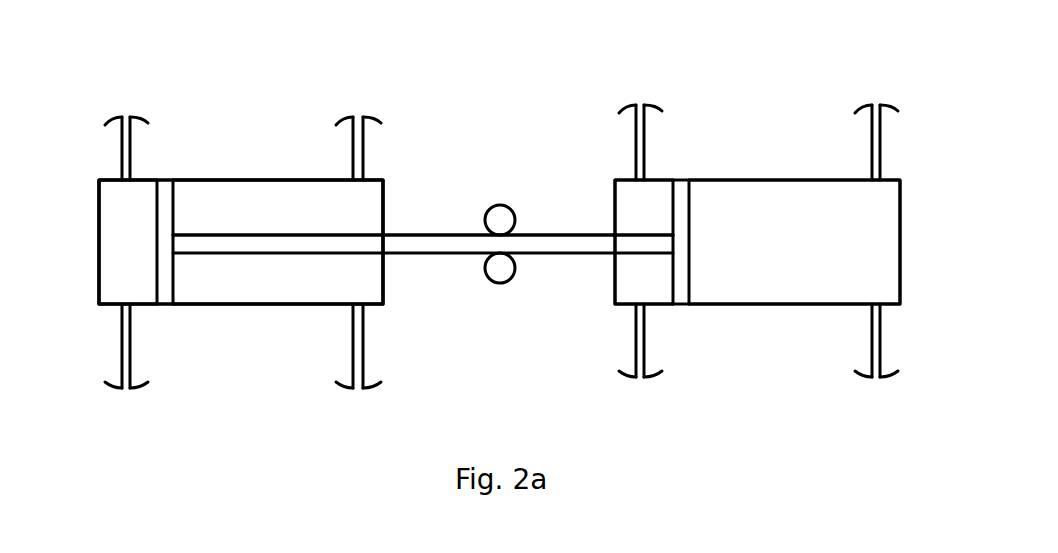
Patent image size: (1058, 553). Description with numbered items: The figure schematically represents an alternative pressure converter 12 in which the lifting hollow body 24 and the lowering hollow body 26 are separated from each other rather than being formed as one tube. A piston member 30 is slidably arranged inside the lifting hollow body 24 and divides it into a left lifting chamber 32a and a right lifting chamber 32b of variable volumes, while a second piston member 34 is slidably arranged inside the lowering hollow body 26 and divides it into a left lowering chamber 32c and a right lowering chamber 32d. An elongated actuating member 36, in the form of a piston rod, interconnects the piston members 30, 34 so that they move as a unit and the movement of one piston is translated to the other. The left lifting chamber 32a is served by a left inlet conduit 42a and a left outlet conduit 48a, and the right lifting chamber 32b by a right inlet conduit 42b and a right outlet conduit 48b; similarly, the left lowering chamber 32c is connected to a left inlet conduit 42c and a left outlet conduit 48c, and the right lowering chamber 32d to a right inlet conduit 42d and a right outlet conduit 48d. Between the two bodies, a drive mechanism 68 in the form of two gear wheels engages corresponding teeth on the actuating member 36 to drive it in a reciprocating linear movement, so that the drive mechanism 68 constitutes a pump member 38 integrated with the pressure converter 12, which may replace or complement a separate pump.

The pressure converter 12 is at (134, 46).
The lifting hollow body 24 is at (293, 178).
The lowering hollow body 26 is at (818, 178).
The piston member 30 is at (160, 210).
The piston member 34 is at (678, 210).
The actuating member 36 is at (282, 244).
The pump member 38 is at (547, 113).
The drive mechanism 68 is at (489, 206).
The left lifting chamber 32a is at (128, 242).
The right lifting chamber 32b is at (278, 242).
The left lowering chamber 32c is at (644, 242).
The right lowering chamber 32d is at (794, 242).
The left inlet conduit 42a is at (122, 334).
The right inlet conduit 42b is at (352, 334).
The left inlet conduit 42c is at (645, 143).
The right inlet conduit 42d is at (881, 143).
The left outlet conduit 48a is at (131, 143).
The right outlet conduit 48b is at (364, 140).
The left outlet conduit 48c is at (645, 334).
The right outlet conduit 48d is at (881, 331).